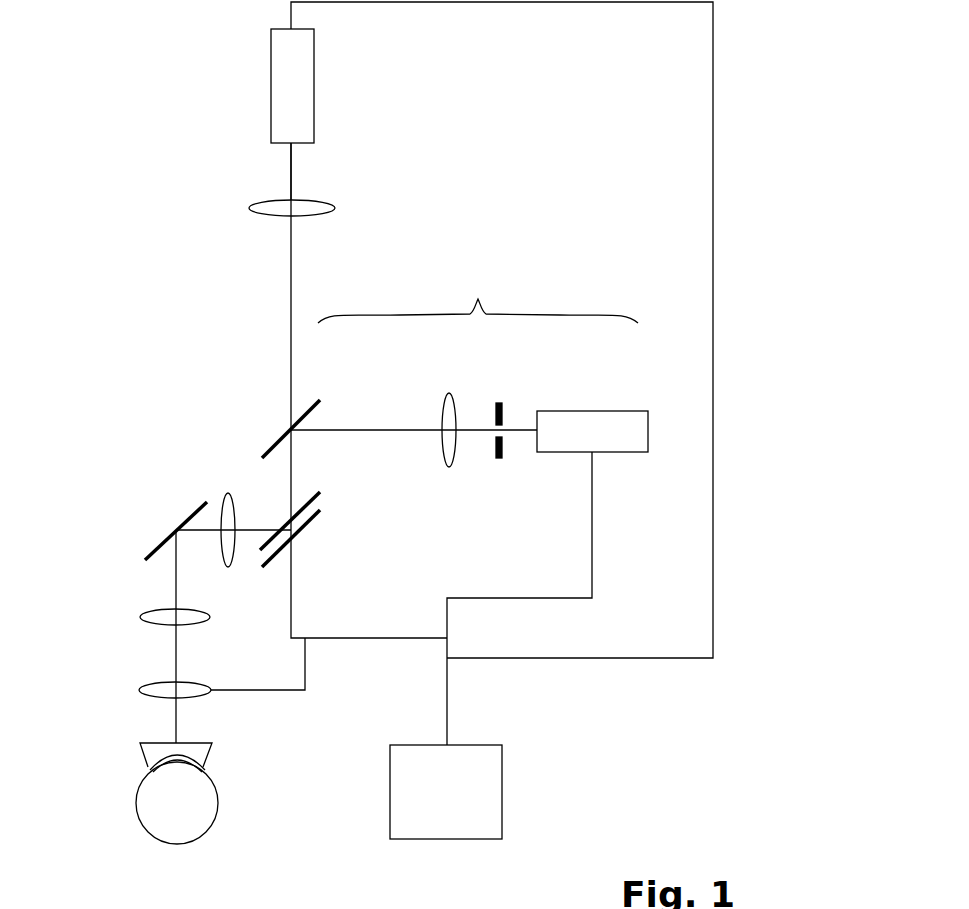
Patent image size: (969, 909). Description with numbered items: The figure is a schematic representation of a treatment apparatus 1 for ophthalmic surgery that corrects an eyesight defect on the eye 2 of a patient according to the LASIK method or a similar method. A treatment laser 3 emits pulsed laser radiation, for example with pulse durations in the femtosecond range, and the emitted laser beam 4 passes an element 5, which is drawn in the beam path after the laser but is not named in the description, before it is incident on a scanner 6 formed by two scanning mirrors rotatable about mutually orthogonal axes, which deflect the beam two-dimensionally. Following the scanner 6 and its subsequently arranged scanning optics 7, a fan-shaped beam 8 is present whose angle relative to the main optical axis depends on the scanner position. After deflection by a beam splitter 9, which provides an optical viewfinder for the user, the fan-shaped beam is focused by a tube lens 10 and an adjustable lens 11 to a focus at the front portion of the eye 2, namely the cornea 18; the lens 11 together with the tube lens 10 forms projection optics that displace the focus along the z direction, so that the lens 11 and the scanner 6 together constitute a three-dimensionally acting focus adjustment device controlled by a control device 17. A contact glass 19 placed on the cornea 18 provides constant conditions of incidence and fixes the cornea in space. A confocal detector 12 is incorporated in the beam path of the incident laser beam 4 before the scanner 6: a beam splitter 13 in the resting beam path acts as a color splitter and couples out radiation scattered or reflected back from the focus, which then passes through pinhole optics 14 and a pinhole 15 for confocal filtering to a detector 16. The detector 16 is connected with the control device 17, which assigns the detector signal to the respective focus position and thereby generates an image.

The treatment apparatus 1 is at (120, 385).
The eye 2 is at (137, 808).
The treatment laser 3 is at (316, 105).
The laser beam 4 is at (296, 184).
The collimating lens 5 is at (257, 201).
The scanner 6 is at (322, 512).
The scanning optics 7 is at (232, 560).
The fan-shaped beam 8 is at (192, 533).
The beam splitter 9 is at (162, 542).
The tube lens 10 is at (140, 617).
The adjustable lens 11 is at (188, 683).
The confocal detector 12 is at (478, 287).
The beam splitter 13 is at (265, 451).
The pinhole optics 14 is at (458, 407).
The pinhole 15 is at (500, 460).
The detector 16 is at (538, 453).
The control device 17 is at (503, 795).
The cornea 18 is at (203, 770).
The contact glass 19 is at (148, 742).